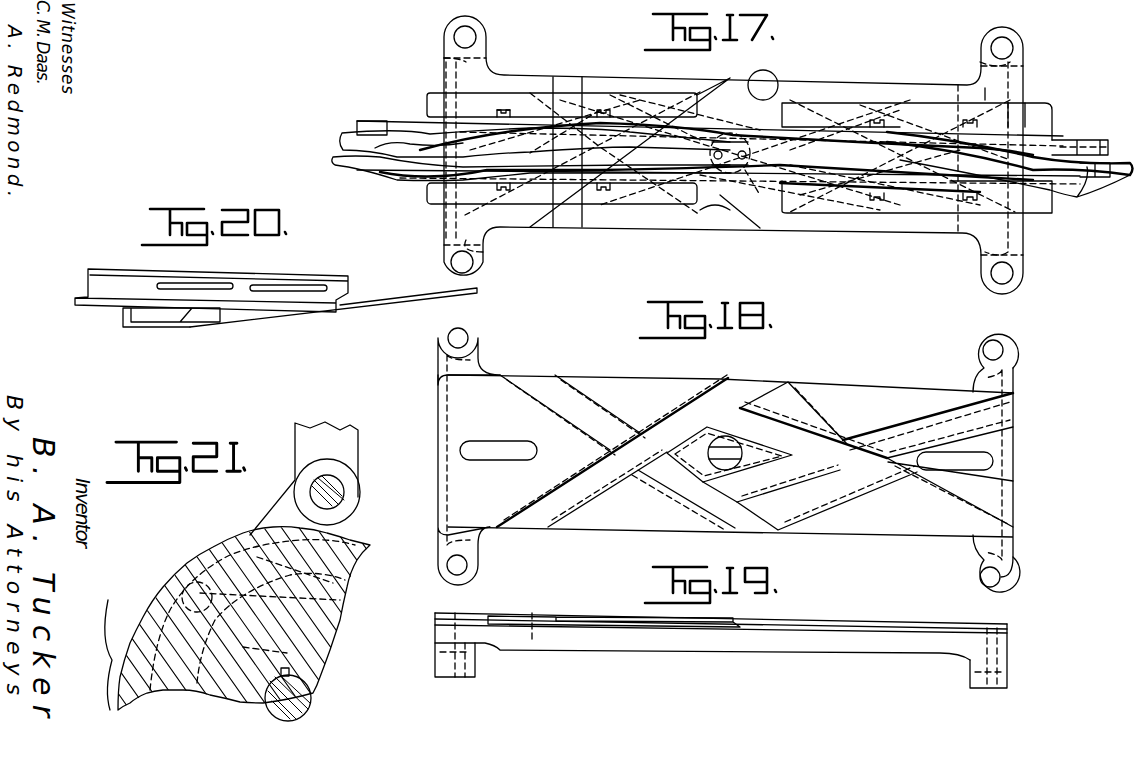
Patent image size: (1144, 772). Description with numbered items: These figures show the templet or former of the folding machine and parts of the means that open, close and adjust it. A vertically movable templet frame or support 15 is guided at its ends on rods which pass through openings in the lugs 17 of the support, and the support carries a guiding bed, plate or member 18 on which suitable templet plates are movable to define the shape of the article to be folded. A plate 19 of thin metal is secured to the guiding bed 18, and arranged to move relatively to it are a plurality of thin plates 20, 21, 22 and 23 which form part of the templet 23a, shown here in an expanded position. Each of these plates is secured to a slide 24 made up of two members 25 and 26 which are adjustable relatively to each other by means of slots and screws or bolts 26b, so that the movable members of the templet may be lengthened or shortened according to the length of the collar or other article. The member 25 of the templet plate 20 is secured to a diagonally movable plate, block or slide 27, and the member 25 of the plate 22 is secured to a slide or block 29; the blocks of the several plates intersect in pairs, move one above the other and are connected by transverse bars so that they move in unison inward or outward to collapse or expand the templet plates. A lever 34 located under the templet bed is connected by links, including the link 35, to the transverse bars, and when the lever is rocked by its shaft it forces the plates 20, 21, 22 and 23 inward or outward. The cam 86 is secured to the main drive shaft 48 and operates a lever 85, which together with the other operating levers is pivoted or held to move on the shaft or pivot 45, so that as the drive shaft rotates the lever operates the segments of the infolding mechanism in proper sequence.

In FIG. 17, the templet frame or support 15 is at (732, 212).
In FIG. 17, the lugs 17 is at (486, 40).
In FIG. 19, the lugs 17 is at (475, 667).
In FIG. 17, the guiding bed, plate or member 18 is at (632, 222).
In FIG. 18, the guiding bed, plate or member 18 is at (838, 360).
In FIG. 19, the guiding bed, plate or member 18 is at (790, 626).
In FIG. 17, the plate 19 is at (487, 167).
In FIG. 17, the plate 20 is at (780, 155).
In FIG. 17, the plate 21 is at (903, 175).
In FIG. 17, the plate 22 is at (392, 172).
In FIG. 17, the plate 23 is at (410, 140).
In FIG. 17, the templet 23a is at (762, 172).
In FIG. 17, the slide 24 is at (1060, 145).
In FIG. 17, the member 25 is at (628, 73).
In FIG. 20, the member 25 is at (75, 300).
In FIG. 17, the member 26 is at (366, 121).
In FIG. 17, the screws or bolts 26b is at (508, 110).
In FIG. 17, the diagonally movable plate, block or slide 27 is at (1012, 120).
In FIG. 20, the slide or block 29 is at (398, 296).
In FIG. 17, the lever 34 is at (748, 95).
In FIG. 17, the link 35 is at (700, 233).
In FIG. 21, the pivot or shaft 45 is at (340, 492).
In FIG. 21, the main drive shaft 48 is at (300, 704).
In FIG. 21, the lever 85 is at (352, 444).
In FIG. 21, the cam 86 is at (170, 600).